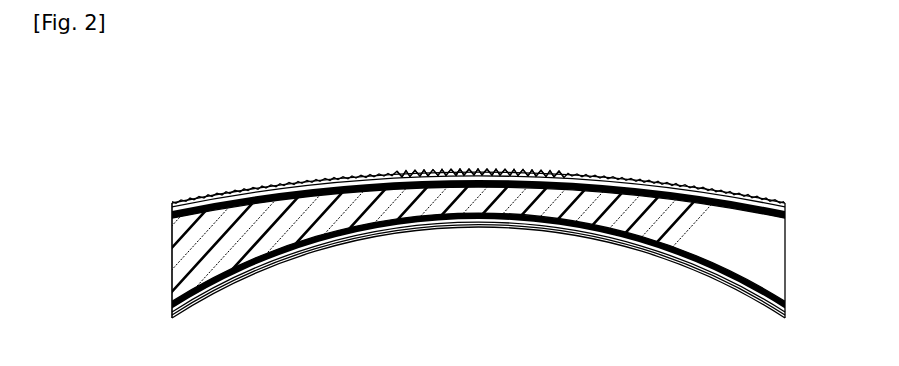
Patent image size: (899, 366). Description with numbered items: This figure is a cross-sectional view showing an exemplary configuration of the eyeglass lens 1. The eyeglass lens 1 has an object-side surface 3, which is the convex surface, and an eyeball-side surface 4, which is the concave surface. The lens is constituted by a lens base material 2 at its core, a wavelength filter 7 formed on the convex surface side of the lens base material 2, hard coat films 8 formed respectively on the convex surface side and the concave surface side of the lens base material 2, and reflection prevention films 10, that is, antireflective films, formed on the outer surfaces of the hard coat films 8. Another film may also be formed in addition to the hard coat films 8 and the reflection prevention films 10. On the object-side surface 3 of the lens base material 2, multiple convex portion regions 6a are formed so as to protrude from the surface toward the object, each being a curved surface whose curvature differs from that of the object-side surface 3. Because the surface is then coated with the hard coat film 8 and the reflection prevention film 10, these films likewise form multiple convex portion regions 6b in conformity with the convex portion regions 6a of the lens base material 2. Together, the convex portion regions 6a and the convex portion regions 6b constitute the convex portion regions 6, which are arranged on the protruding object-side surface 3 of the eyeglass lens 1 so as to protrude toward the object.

The eyeglass lens 1 is at (699, 141).
The lens base material 2 is at (172, 266).
The object-side surface 3 is at (268, 192).
The eyeball-side surface 4 is at (267, 262).
The convex portion regions 6 is at (428, 111).
The convex portion regions 6a is at (456, 177).
The convex portion regions 6b is at (455, 176).
The wavelength filter 7 is at (172, 212).
The hard coat films 8 is at (303, 186).
The reflection prevention films 10 is at (333, 181).